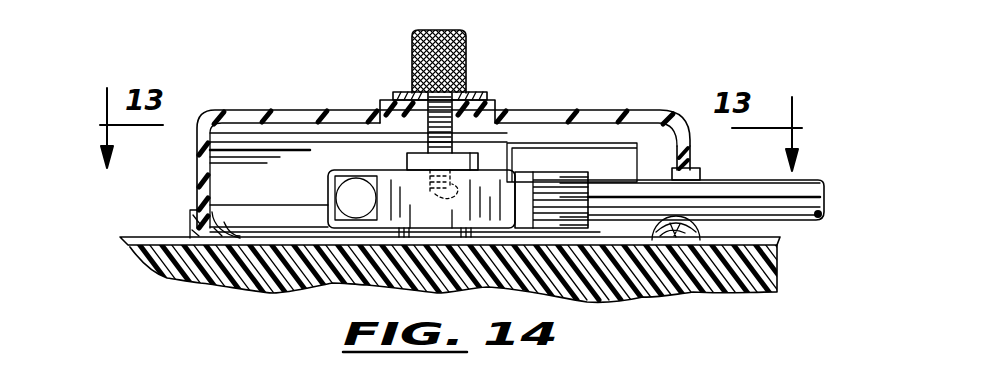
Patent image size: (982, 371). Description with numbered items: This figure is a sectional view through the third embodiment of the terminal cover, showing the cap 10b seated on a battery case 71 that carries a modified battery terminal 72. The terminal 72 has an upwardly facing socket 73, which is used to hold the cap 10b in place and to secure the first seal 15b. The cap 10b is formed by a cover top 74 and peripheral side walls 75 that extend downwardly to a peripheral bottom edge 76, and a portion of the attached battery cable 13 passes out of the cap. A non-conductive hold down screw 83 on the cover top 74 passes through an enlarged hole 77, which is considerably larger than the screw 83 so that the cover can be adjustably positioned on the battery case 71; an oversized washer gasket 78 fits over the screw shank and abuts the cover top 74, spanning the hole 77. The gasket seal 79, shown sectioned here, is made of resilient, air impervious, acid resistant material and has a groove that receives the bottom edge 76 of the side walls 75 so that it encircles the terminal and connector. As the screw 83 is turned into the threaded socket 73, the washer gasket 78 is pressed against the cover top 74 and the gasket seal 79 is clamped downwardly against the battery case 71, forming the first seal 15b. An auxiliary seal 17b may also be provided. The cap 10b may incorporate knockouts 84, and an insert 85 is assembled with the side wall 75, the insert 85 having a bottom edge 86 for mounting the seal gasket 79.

The cap 10b is at (252, 106).
The battery cable 13 is at (800, 183).
The first seal 15b is at (180, 229).
The auxiliary seal 17b is at (552, 215).
The battery case 71 is at (297, 297).
The modified battery terminal 72 is at (473, 153).
The socket 73 is at (421, 203).
The cover top 74 is at (602, 110).
The peripheral side walls 75 is at (293, 150).
The peripheral bottom edge 76 is at (193, 280).
The enlarged hole 77 is at (412, 130).
The washer gasket 78 is at (488, 100).
The gasket seal 79 is at (298, 232).
The screw 83 is at (467, 50).
The knockouts 84 is at (198, 181).
The insert 85 is at (697, 156).
The bottom edge 86 is at (694, 246).